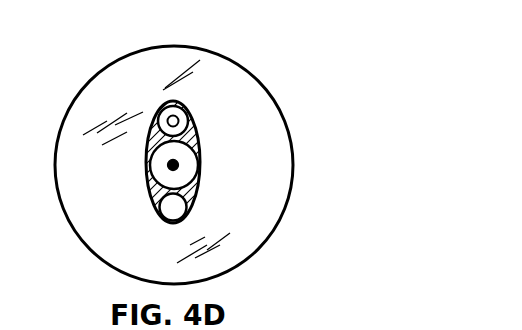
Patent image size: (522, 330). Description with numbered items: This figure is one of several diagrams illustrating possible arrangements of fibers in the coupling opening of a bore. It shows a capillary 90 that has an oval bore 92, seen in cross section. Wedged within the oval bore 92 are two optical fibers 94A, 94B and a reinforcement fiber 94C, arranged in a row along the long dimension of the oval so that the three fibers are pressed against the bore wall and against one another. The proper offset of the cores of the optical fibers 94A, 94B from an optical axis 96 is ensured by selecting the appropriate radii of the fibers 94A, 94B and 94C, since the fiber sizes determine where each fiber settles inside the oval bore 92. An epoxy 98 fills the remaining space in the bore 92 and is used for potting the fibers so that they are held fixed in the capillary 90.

The capillary 90 is at (78, 92).
The oval bore 92 is at (150, 190).
The optical fiber 94A is at (183, 123).
The optical fiber 94B is at (192, 168).
The reinforcement fiber 94C is at (175, 210).
The optical axis 96 is at (168, 167).
The epoxy 98 is at (156, 200).